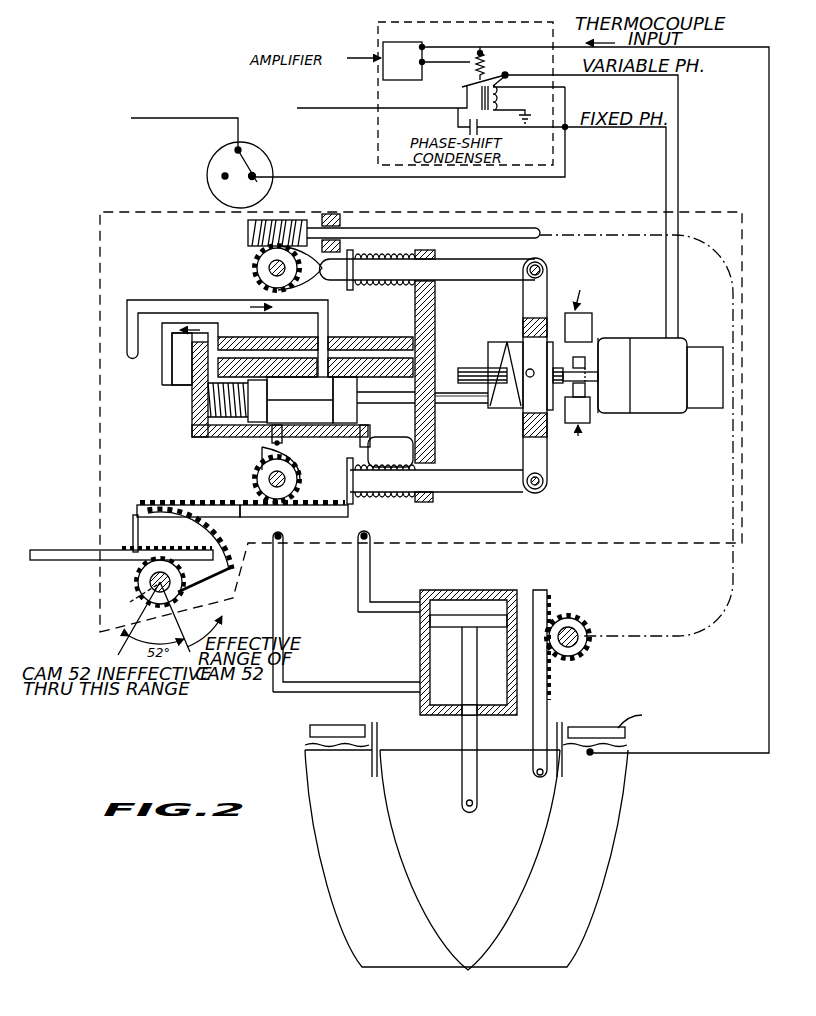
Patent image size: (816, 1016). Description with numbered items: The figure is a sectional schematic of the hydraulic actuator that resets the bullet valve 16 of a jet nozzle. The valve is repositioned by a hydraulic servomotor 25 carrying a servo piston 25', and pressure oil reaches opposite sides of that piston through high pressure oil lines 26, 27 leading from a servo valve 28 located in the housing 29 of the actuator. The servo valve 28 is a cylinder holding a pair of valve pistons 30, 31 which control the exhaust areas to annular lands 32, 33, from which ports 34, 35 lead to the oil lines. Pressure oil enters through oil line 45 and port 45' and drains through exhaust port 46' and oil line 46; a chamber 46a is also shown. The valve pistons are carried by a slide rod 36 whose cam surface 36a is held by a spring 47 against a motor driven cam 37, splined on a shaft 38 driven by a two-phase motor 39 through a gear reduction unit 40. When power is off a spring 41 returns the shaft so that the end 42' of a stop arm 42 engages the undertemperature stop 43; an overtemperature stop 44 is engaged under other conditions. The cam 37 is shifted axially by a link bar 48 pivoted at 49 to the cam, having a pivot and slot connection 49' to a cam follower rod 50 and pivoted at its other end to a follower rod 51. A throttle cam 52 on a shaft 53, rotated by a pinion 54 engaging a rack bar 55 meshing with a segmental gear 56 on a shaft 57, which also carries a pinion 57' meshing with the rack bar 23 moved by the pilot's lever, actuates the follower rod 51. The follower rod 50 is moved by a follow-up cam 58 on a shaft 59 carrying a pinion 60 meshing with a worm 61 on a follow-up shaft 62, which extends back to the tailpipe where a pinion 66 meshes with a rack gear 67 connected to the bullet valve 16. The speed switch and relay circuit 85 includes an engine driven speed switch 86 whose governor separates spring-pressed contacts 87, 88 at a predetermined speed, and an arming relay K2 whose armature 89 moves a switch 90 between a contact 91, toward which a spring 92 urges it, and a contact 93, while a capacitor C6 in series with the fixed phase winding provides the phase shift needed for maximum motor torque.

The bullet valve 16 is at (480, 898).
The rack bar 23 is at (58, 530).
The hydraulic servomotor 25 is at (442, 652).
The servo piston 25' is at (485, 686).
The high pressure oil line 26 is at (362, 442).
The high pressure oil line 27 is at (283, 440).
The servo valve 28 is at (188, 403).
The housing 29 is at (100, 262).
The valve piston 30 is at (258, 401).
The valve piston 31 is at (345, 400).
The annular land 32 is at (280, 380).
The annular land 33 is at (365, 392).
The port 34 is at (282, 432).
The port 35 is at (368, 430).
The slide rod 36 is at (447, 406).
The cam surface 36a is at (500, 410).
The motor driven cam 37 is at (510, 345).
The shaft 38 is at (462, 370).
The motor 39 is at (662, 414).
The gear reduction unit 40 is at (605, 414).
The spring 41 is at (583, 365).
The stop arm 42 is at (604, 347).
The end of stop arm 42' is at (598, 385).
The undertemperature stop 43 is at (583, 330).
The overtemperature stop 44 is at (565, 405).
The oil line 45 is at (227, 323).
The port 45' is at (315, 339).
The oil line 46 is at (163, 354).
The exhaust port 46' is at (461, 386).
The chamber 46a is at (208, 374).
The spring 47 is at (212, 408).
The link bar 48 is at (525, 455).
The pivot 49 is at (520, 375).
The pivot and slot connection 49' is at (562, 249).
The cam follower rod 50 is at (478, 281).
The follower rod 51 is at (472, 490).
The throttle cam 52 is at (262, 452).
The shaft 53 is at (268, 482).
The pinion 54 is at (300, 495).
The rack bar 55 is at (160, 506).
The segmental gear 56 is at (134, 532).
The shaft 57 is at (143, 582).
The pinion 57' is at (167, 568).
The follow-up cam 58 is at (310, 272).
The shaft 59 is at (270, 276).
The pinion 60 is at (255, 265).
The worm 61 is at (248, 231).
The follow-up shaft 62 is at (396, 236).
The pinion 66 is at (580, 622).
The rack gear 67 is at (540, 713).
The speed switch and relay circuit 85 is at (313, 177).
The speed switch 86 is at (207, 166).
The contact 87 is at (256, 178).
The contact 88 is at (225, 177).
The armature 89 is at (555, 80).
The switch 90 is at (503, 76).
The contact 91 is at (466, 67).
The spring 92 is at (481, 52).
The contact 93 is at (463, 88).
The capacitor C6 is at (466, 128).
The arming relay K2 is at (523, 102).